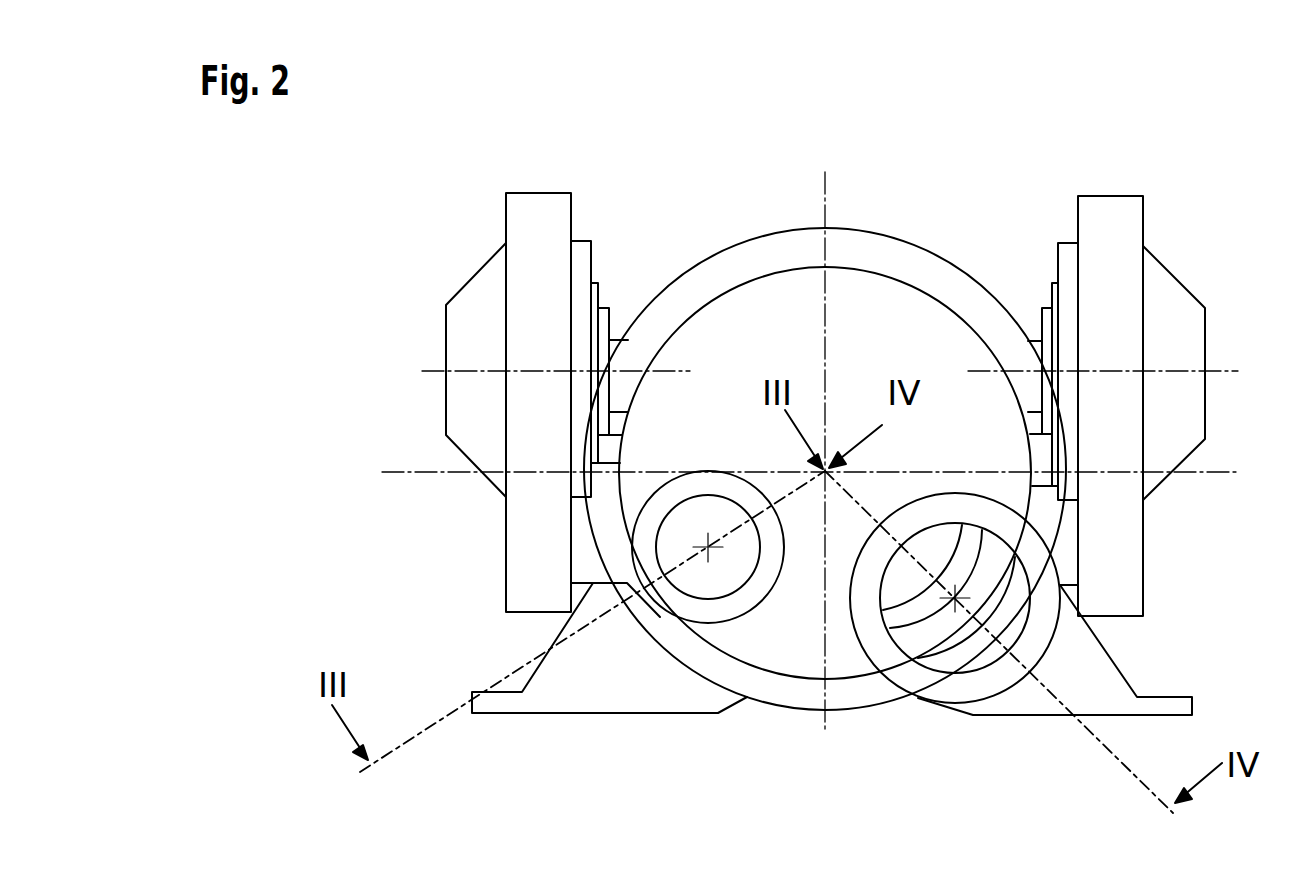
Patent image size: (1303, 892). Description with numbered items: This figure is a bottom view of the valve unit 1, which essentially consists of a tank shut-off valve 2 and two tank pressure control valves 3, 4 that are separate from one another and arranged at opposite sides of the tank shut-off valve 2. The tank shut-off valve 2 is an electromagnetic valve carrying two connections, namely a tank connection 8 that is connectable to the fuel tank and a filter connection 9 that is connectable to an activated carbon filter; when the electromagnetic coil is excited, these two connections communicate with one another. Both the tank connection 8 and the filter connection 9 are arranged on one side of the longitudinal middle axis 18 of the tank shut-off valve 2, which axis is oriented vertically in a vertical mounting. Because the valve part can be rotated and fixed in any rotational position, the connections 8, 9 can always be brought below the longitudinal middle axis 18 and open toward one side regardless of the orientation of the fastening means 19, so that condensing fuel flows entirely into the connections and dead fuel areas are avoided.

The valve unit 1 is at (968, 208).
The tank shut-off valve 2 is at (883, 327).
The tank pressure control valve 3 is at (475, 308).
The tank pressure control valve 4 is at (1172, 308).
The tank connection 8 is at (695, 577).
The filter connection 9 is at (980, 647).
The longitudinal middle axis 18 is at (428, 470).
The fastening means 19 is at (585, 680).